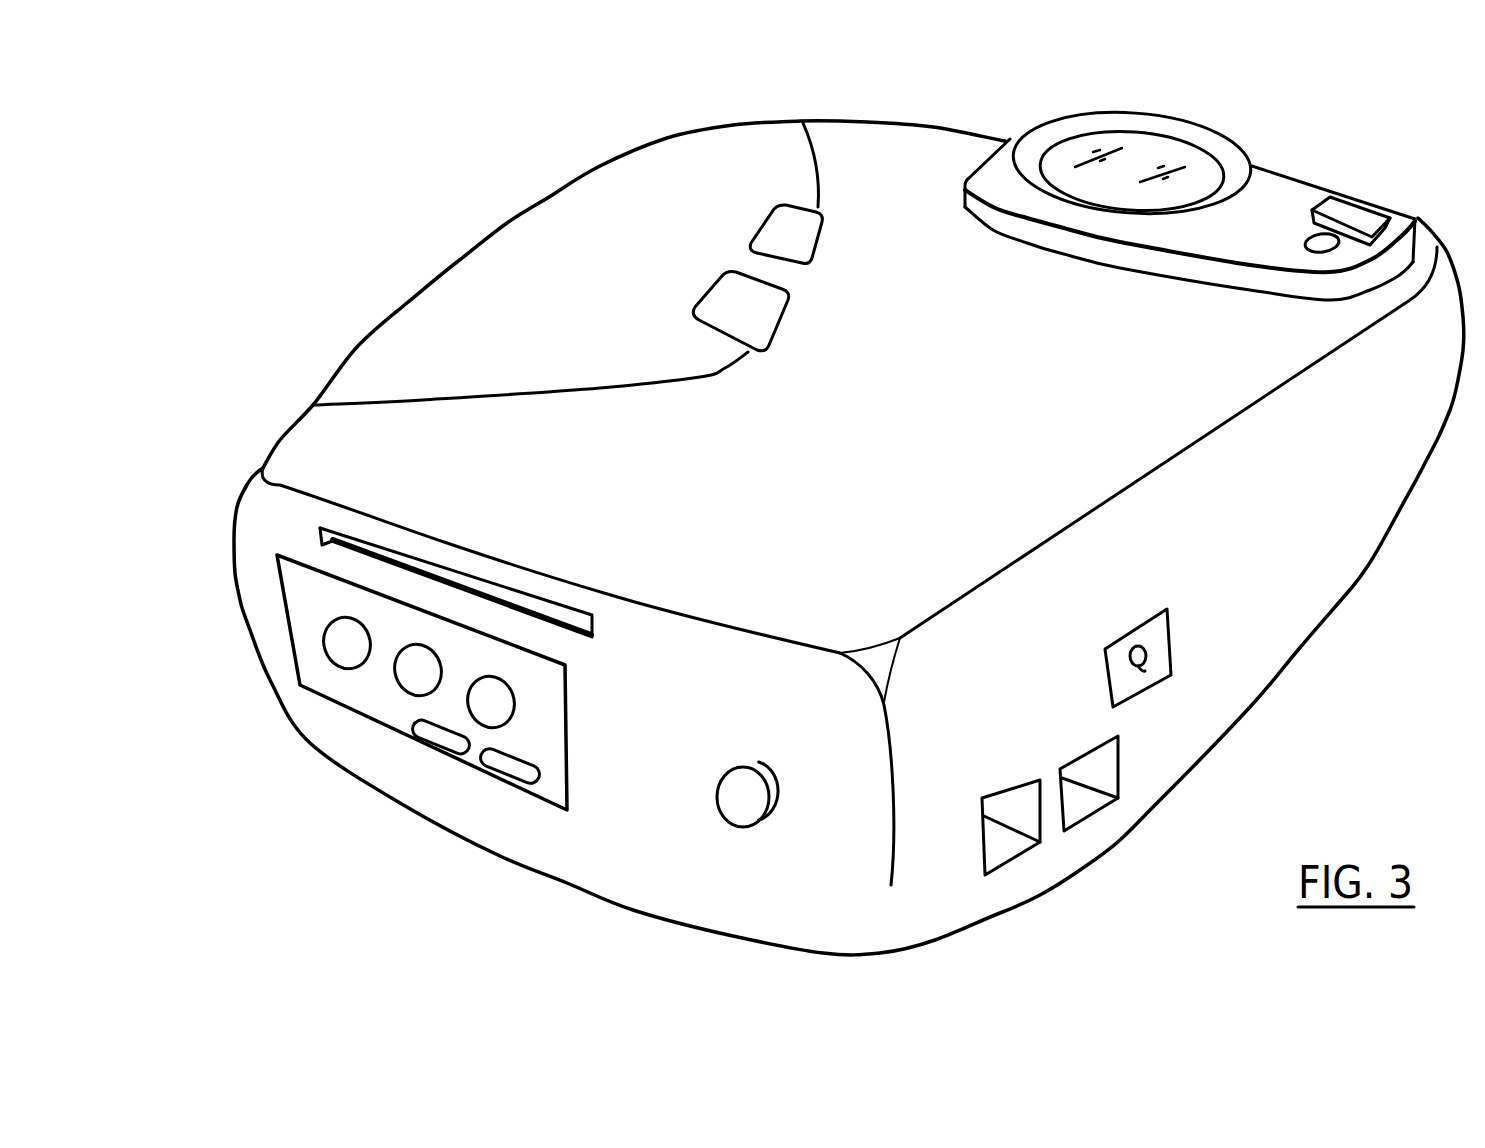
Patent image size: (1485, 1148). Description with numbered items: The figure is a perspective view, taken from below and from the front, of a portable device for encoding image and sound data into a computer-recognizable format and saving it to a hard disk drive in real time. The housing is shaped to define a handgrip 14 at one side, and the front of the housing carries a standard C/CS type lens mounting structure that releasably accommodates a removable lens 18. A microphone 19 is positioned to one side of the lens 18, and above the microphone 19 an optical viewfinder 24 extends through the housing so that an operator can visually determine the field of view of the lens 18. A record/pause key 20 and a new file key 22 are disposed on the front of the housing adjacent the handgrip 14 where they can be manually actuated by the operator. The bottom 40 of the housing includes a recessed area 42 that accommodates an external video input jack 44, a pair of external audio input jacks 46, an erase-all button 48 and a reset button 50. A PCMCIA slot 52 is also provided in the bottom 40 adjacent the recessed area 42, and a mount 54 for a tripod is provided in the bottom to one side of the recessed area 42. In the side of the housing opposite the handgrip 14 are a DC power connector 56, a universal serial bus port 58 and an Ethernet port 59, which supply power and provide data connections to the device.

The handgrip 14 is at (638, 361).
The removable lens 18 is at (1203, 170).
The microphone 19 is at (1306, 243).
The record/pause key 20 is at (773, 233).
The new file key 22 is at (718, 297).
The optical viewfinder 24 is at (1352, 217).
The bottom 40 is at (513, 847).
The recessed area 42 is at (290, 582).
The external video input jack 44 is at (503, 711).
The external audio input jacks 46 is at (412, 676).
The erase-all button 48 is at (442, 737).
The reset button 50 is at (535, 778).
The PCMCIA slot 52 is at (595, 630).
The mount for a tripod 54 is at (747, 810).
The DC power connector 56 is at (1145, 671).
The universal serial bus (USB) port 58 is at (1076, 795).
The Ethernet port 59 is at (1000, 849).